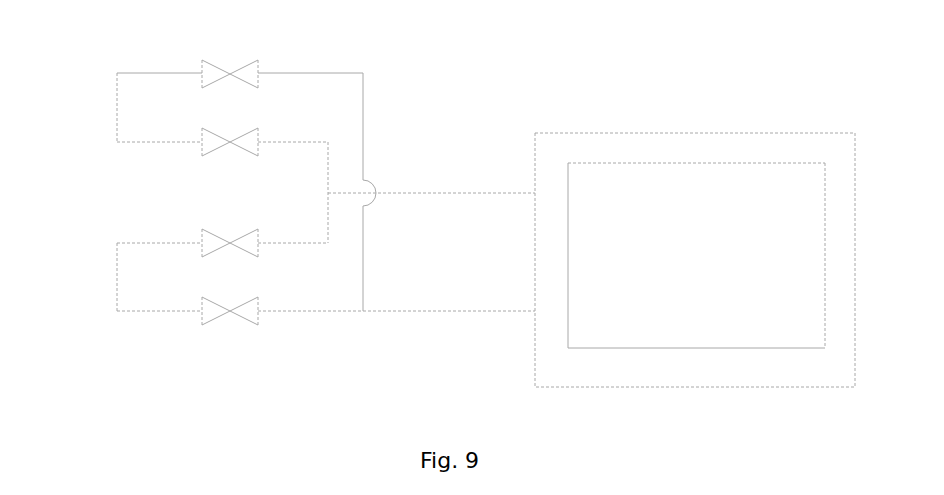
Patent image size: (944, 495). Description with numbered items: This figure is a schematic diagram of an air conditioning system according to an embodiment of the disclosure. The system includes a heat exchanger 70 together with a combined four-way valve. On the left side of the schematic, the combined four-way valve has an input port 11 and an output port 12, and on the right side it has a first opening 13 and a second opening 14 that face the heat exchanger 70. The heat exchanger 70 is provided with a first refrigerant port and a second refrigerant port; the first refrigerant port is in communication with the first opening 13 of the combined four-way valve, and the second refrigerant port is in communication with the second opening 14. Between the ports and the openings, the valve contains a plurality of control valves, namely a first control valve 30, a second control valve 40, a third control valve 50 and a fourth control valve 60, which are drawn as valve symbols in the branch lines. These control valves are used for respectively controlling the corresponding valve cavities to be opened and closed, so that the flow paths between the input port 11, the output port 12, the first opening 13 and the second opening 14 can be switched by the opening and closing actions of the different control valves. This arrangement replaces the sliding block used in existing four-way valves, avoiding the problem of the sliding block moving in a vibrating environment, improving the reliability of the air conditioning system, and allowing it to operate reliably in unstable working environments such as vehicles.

The input port 11 is at (117, 107).
The output port 12 is at (117, 278).
The first opening 13 is at (431, 177).
The second opening 14 is at (396, 295).
The first control valve 30 is at (230, 63).
The second control valve 40 is at (230, 132).
The third control valve 50 is at (230, 234).
The fourth control valve 60 is at (230, 302).
The heat exchanger 70 is at (695, 260).